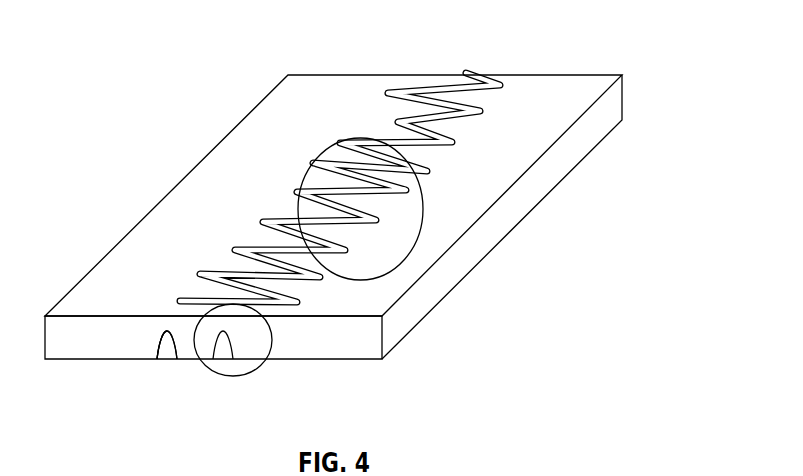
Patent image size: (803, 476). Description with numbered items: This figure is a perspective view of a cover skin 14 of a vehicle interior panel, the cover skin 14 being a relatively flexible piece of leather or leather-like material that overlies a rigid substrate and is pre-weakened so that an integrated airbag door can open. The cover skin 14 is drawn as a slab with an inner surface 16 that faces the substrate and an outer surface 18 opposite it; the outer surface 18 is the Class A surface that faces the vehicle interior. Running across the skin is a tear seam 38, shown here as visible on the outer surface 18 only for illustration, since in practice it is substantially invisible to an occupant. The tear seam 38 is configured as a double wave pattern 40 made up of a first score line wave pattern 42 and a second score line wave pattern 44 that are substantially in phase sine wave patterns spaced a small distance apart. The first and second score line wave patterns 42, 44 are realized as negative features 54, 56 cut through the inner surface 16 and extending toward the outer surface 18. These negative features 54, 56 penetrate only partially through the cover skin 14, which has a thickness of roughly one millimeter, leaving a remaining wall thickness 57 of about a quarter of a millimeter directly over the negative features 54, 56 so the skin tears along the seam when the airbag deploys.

The cover skin 14 is at (320, 348).
The inner surface 16 is at (92, 360).
The outer surface 18 is at (356, 89).
The tear seam 38 is at (275, 203).
The double wave pattern 40 is at (478, 62).
The first score line wave pattern 42 is at (480, 112).
The second score line wave pattern 44 is at (222, 281).
The negative feature 54 is at (261, 314).
The negative feature 56 is at (159, 336).
The remaining wall thickness 57 is at (163, 317).